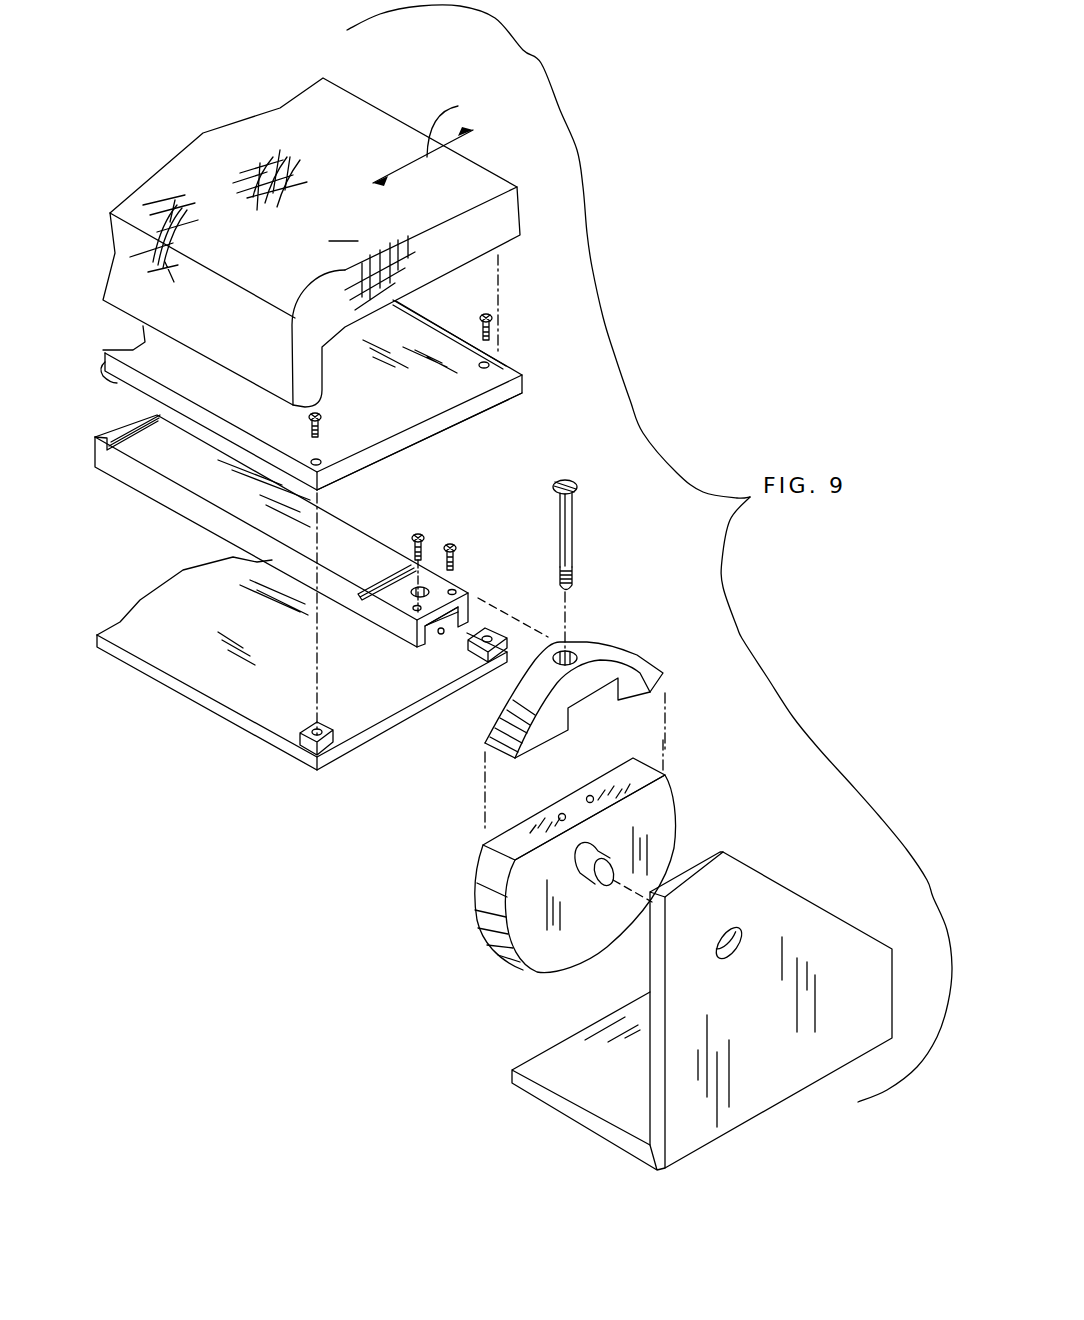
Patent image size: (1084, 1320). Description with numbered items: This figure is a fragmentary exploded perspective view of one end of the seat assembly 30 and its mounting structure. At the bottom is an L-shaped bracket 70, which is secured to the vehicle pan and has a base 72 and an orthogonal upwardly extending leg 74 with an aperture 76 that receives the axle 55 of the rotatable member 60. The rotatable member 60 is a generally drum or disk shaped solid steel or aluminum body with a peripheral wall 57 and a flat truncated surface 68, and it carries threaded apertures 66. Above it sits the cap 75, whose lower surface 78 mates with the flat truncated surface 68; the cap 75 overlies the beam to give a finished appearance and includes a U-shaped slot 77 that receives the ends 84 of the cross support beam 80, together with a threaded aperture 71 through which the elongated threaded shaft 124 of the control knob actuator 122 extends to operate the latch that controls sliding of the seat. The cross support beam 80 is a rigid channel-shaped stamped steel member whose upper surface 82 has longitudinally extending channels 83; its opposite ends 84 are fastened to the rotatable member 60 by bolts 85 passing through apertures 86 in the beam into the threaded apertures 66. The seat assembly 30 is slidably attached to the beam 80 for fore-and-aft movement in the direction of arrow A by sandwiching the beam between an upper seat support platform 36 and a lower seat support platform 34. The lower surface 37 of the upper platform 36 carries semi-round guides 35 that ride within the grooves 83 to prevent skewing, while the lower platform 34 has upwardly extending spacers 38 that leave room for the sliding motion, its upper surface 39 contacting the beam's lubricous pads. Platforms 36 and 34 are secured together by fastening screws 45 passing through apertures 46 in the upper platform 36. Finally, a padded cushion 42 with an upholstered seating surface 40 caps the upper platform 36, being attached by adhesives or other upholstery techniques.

The seat assembly 30 is at (311, 235).
The seating surface 40 is at (343, 229).
The padded cushion 42 is at (340, 160).
The upper seat support platform 36 is at (433, 318).
The lower surface of platform 37 is at (488, 403).
The semi-round guides 35 is at (105, 378).
The fastening screws 45 is at (321, 412).
The apertures 46 is at (320, 459).
The cross support beam 80 is at (305, 574).
The upper surface of beam 82 is at (172, 470).
The channels 83 is at (127, 430).
The ends of beam 84 is at (463, 600).
The bolts 85 is at (452, 543).
The apertures in beam 86 is at (455, 589).
The lower seat support platform 34 is at (302, 696).
The upper surface of lower platform 39 is at (232, 690).
The spacers 38 is at (307, 742).
The control knob actuator 122 is at (606, 557).
The threaded shaft 124 is at (573, 533).
The cap 75 is at (623, 798).
The threaded aperture 71 is at (570, 642).
The aperture 76 is at (547, 645).
The U-shaped slot 77 is at (585, 702).
The lower surface of cap 78 is at (652, 690).
The rotatable member 60 is at (570, 885).
The peripheral wall 57 is at (495, 870).
The flat truncated surface 68 is at (640, 775).
The threaded apertures 66 is at (586, 800).
The axle 55 is at (610, 862).
The L-shaped bracket 70 is at (686, 995).
The base 72 is at (550, 1097).
The leg 74 is at (810, 923).